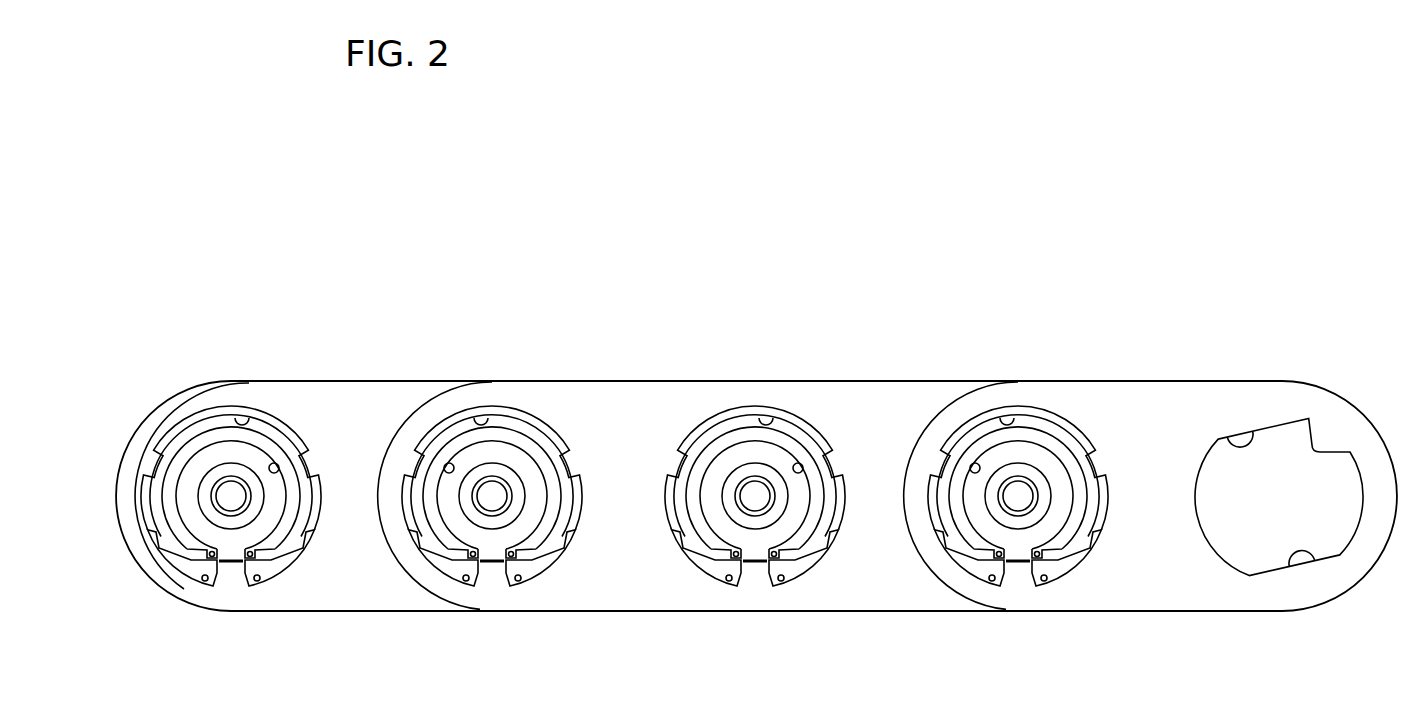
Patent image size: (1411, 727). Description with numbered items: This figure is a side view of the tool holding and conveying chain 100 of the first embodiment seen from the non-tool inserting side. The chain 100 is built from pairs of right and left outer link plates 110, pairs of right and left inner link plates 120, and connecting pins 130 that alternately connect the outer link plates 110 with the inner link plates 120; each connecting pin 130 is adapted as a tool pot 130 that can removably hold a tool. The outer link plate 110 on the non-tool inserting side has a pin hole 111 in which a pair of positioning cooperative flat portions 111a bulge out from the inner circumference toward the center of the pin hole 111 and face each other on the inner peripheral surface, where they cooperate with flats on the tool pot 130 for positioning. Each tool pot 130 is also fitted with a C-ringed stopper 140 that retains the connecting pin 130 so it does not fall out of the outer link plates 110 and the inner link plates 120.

The tool holding and conveying chain 100 is at (1160, 211).
The outer link plate 110 is at (637, 580).
The pin hole 111 is at (1313, 418).
The positioning cooperative flat portion 111a is at (232, 423).
The inner link plate 120 is at (358, 580).
The connecting pin (tool pot) 130 is at (281, 442).
The C-ringed stopper 140 is at (183, 427).